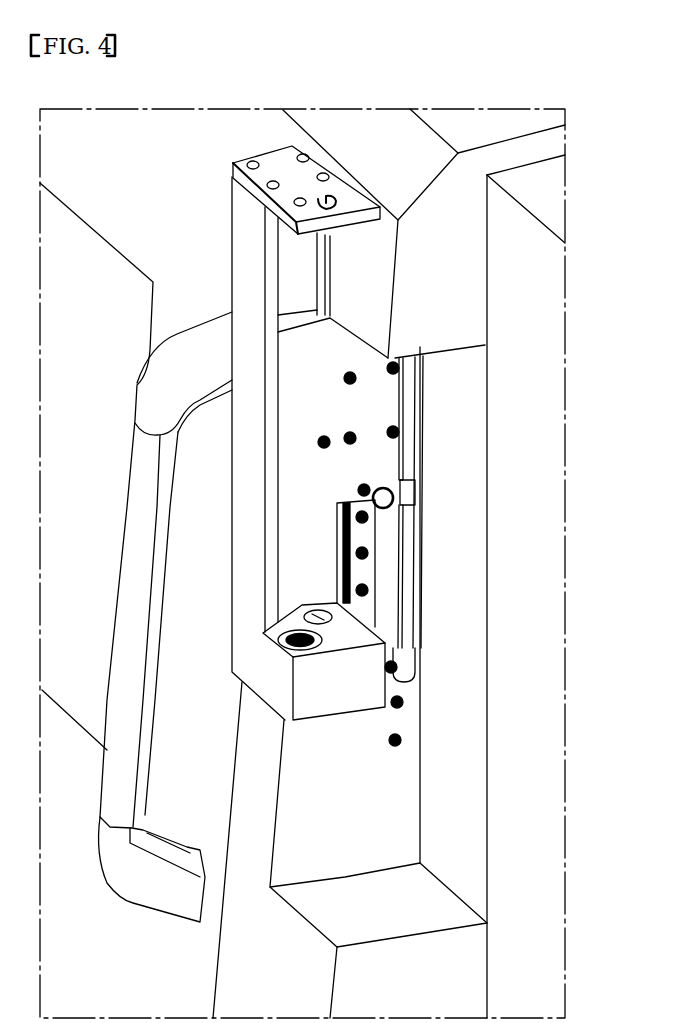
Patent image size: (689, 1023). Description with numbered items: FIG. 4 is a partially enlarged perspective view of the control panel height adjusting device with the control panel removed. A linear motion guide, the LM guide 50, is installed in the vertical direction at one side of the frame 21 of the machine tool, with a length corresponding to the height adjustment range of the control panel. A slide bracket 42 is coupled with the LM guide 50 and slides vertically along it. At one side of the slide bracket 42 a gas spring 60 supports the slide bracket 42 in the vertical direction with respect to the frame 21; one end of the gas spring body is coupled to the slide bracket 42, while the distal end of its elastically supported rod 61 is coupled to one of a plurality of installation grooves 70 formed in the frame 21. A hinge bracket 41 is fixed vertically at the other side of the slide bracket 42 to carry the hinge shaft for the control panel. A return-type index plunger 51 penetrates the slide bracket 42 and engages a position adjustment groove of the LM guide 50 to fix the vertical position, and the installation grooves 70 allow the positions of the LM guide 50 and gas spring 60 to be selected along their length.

The frame 21 is at (552, 140).
The hinge bracket 41 is at (233, 173).
The slide bracket 42 is at (353, 358).
The LM guide 50 is at (377, 577).
The return-type index plunger 51 is at (405, 497).
The gas spring 60 is at (417, 430).
The rod 61 is at (412, 613).
The installation grooves 70 is at (402, 738).